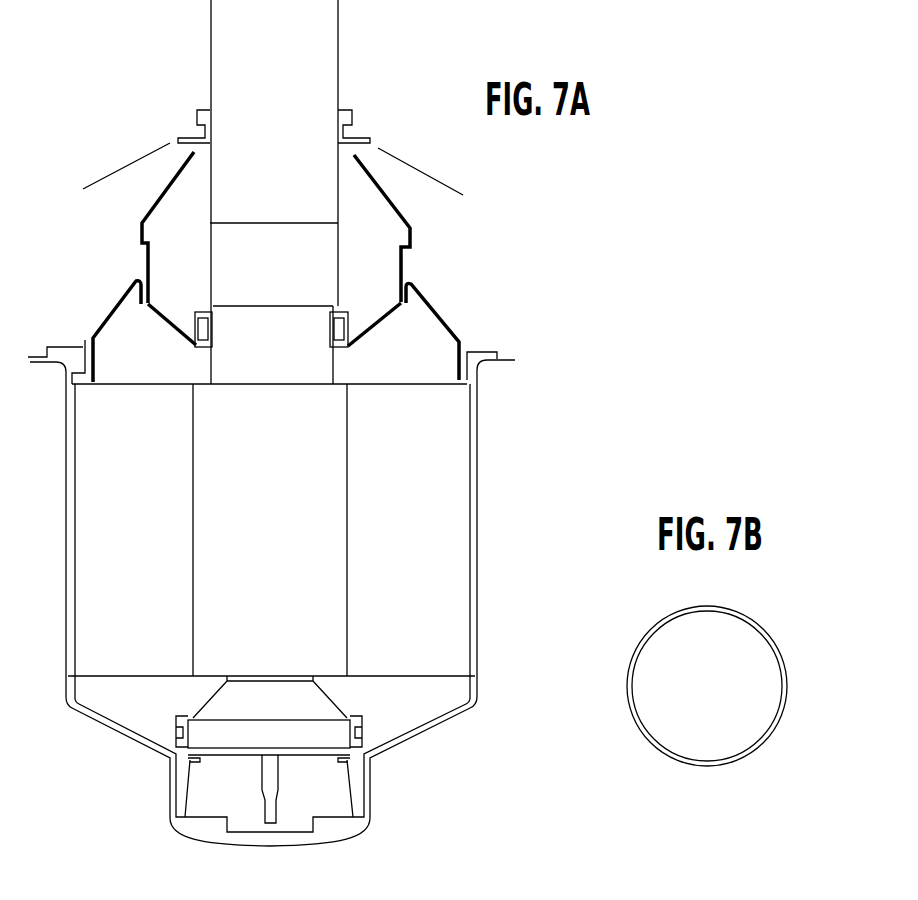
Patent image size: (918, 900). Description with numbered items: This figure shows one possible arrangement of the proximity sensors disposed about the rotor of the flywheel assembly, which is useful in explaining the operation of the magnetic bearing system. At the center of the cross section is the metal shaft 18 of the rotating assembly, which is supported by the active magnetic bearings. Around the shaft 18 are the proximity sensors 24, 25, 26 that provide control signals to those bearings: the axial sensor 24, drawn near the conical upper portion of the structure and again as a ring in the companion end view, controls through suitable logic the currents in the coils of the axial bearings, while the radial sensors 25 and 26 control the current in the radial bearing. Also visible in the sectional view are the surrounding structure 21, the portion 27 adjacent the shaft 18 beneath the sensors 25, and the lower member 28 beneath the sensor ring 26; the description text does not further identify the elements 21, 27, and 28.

In FIG. 7A, the metal shaft 18 is at (327, 42).
In FIG. 7A, the cylindrical housing body 21 is at (440, 478).
In FIG. 7A, the axial sensor 24 is at (355, 155).
In FIG. 7B, the axial sensor 24 is at (773, 643).
In FIG. 7A, the radial sensor 25 is at (345, 312).
In FIG. 7A, the radial sensor 26 is at (362, 732).
In FIG. 7A, the inner tube section 27 is at (333, 368).
In FIG. 7A, the bottom cup 28 is at (370, 757).